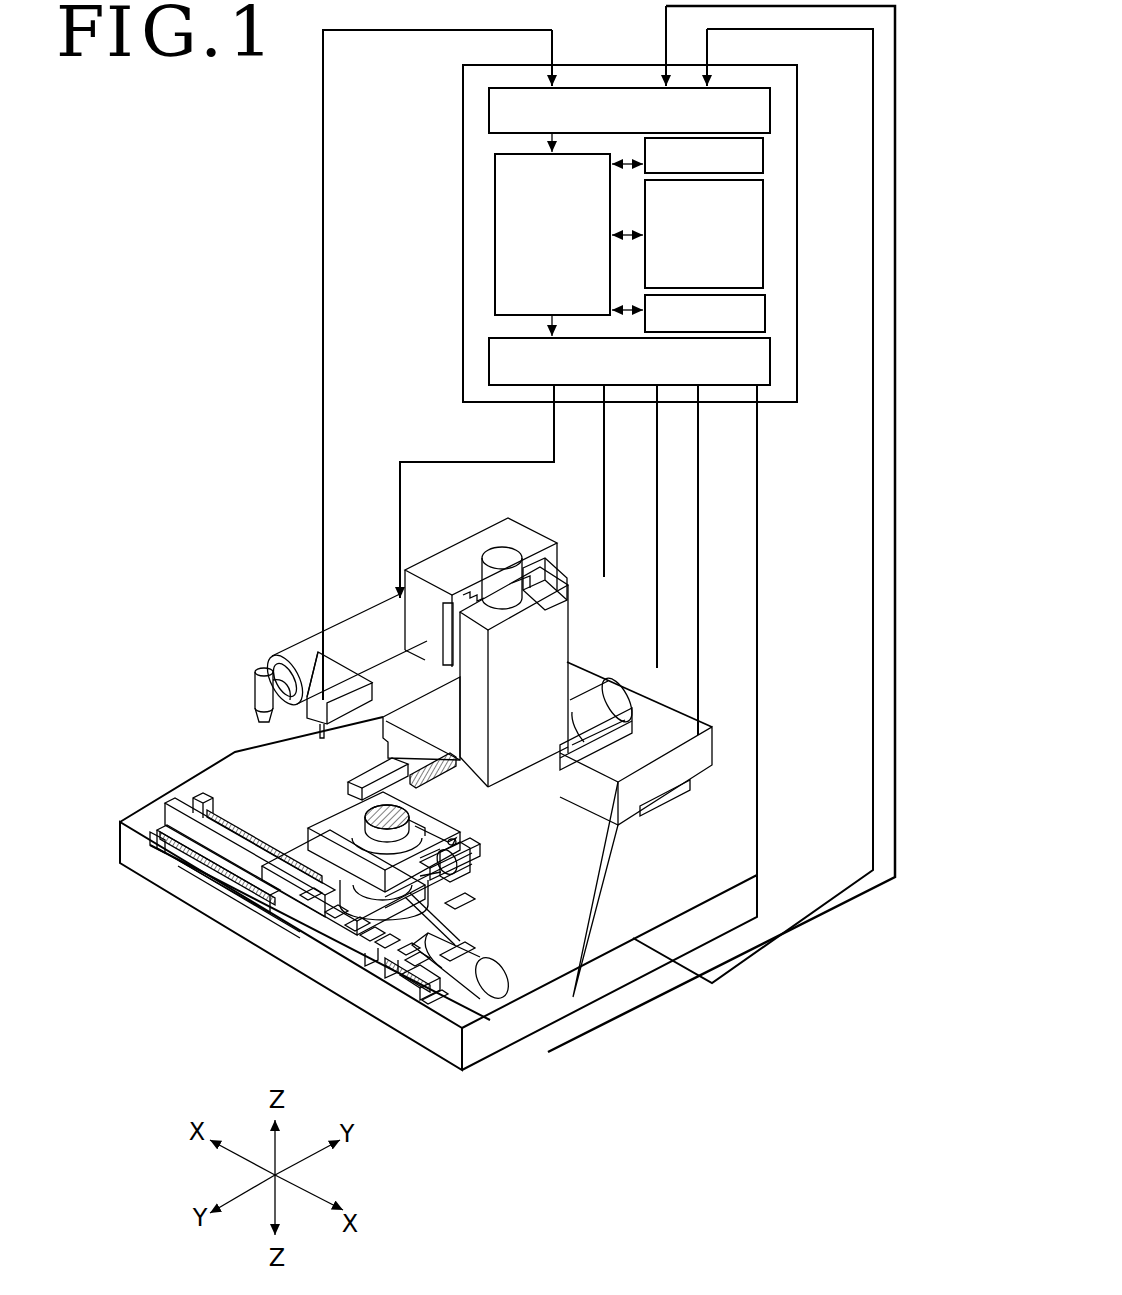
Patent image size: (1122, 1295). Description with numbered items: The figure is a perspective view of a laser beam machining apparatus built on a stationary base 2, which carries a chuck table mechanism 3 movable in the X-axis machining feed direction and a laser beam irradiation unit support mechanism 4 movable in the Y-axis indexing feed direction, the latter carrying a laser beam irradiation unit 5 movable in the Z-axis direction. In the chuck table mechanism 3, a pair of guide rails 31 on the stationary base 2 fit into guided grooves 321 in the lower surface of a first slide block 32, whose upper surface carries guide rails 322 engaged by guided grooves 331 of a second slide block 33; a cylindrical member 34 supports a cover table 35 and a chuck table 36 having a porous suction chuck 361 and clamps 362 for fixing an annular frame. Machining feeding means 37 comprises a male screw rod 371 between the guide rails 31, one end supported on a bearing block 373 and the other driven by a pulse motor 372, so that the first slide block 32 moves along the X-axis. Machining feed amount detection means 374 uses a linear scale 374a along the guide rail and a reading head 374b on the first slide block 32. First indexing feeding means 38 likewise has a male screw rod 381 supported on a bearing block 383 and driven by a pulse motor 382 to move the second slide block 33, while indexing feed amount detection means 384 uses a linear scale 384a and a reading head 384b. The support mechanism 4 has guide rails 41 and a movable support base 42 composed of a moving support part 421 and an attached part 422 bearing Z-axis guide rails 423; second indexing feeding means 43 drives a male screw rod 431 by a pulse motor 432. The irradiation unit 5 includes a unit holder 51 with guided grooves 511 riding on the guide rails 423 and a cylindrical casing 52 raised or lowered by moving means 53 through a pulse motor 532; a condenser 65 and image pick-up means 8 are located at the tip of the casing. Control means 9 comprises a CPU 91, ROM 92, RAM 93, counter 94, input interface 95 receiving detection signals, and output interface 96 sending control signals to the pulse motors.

The stationary base 2 is at (640, 905).
The chuck table mechanism 3 is at (570, 926).
The laser beam irradiation unit support mechanism 4 is at (698, 742).
The laser beam irradiation unit 5 is at (246, 622).
The image pick-up means 8 is at (318, 736).
The control means 9 is at (598, 64).
The guide rails 31 is at (213, 800).
The first slide block 32 is at (392, 952).
The second slide block 33 is at (430, 938).
The cylindrical member 34 is at (410, 988).
The cover table 35 is at (468, 854).
The chuck table 36 is at (352, 819).
The machining feeding means 37 is at (423, 998).
The first indexing feeding means 38 is at (440, 876).
The guide rails 41 is at (373, 773).
The movable support base 42 is at (570, 652).
The second indexing feeding means 43 is at (632, 700).
The unit holder 51 is at (478, 542).
The cylindrical casing 52 is at (345, 615).
The moving means 53 is at (500, 556).
The condenser 65 is at (255, 692).
The central processor unit (CPU) 91 is at (495, 195).
The read only memory (ROM) 92 is at (763, 168).
The random access memory (RAM) 93 is at (763, 232).
The counter 94 is at (765, 298).
The input interface 95 is at (489, 110).
The output interface 96 is at (489, 360).
The guided grooves 321 is at (413, 965).
The guide rails 322 is at (355, 925).
The guided grooves 331 is at (304, 897).
The suction chuck 361 is at (465, 834).
The clamps 362 is at (375, 828).
The male screw rod 371 is at (230, 860).
The pulse motor 372 is at (545, 1040).
The bearing block 373 is at (196, 800).
The machining feed amount detection means 374 is at (392, 975).
The linear scale 374a is at (150, 843).
The reading head 374b is at (372, 960).
The male screw rod 381 is at (336, 912).
The pulse motor 382 is at (470, 860).
The bearing block 383 is at (370, 935).
The indexing feed amount detection means 384 is at (494, 982).
The linear scale 384a is at (432, 1008).
The reading head 384b is at (455, 912).
The moving support part 421 is at (393, 712).
The attached part 422 is at (568, 612).
The guide rails 423 is at (462, 594).
The male screw rod 431 is at (422, 752).
The pulse motor 432 is at (648, 672).
The guided grooves 511 is at (420, 592).
The pulse motor 532 is at (508, 556).